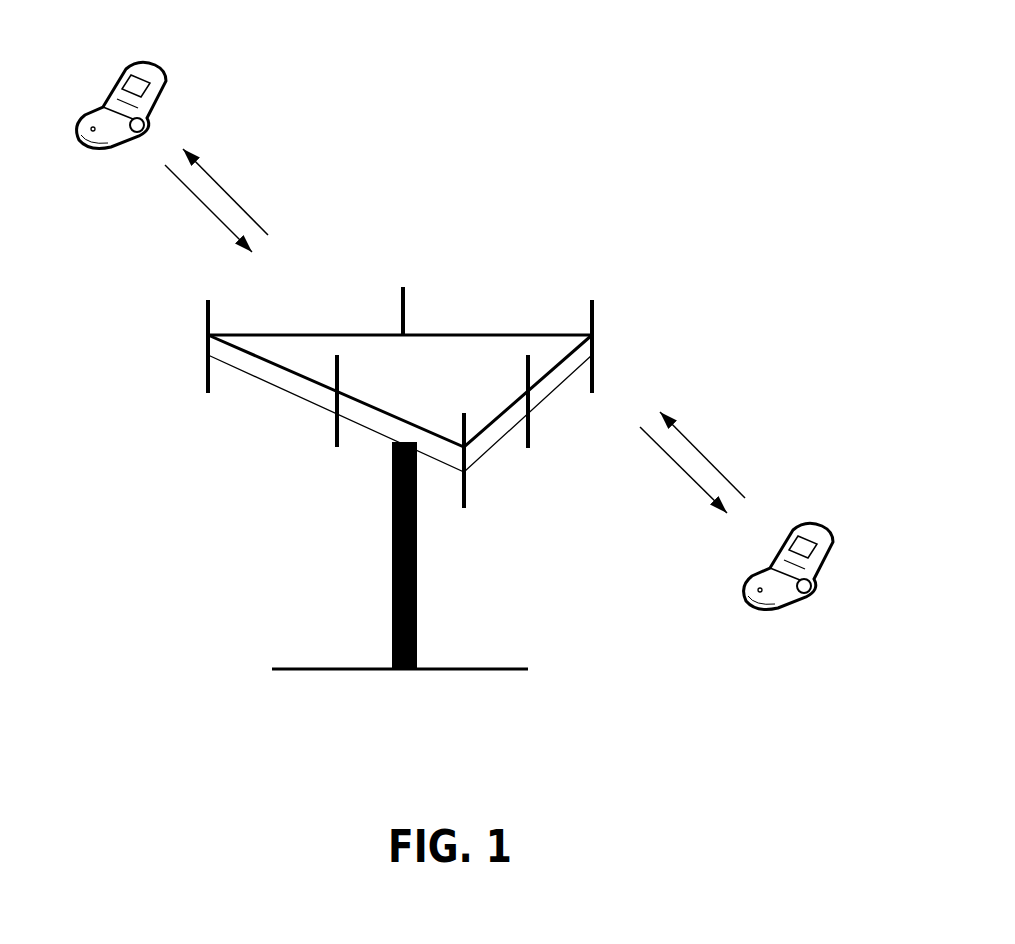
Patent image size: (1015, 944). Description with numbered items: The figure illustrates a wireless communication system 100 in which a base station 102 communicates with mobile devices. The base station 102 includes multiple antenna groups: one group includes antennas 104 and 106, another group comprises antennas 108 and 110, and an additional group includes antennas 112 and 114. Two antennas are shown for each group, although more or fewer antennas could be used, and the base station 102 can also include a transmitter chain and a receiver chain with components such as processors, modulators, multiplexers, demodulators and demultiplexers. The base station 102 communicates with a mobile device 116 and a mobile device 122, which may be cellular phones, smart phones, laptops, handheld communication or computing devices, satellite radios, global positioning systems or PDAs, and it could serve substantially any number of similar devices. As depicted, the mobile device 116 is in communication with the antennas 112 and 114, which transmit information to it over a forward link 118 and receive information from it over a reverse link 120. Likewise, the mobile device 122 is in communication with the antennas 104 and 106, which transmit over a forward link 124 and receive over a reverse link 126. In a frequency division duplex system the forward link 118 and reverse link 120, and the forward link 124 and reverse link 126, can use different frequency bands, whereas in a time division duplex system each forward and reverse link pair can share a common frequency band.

The wireless communication system 100 is at (890, 110).
The base station 102 is at (417, 670).
The antenna 104 is at (592, 298).
The antenna 106 is at (528, 427).
The antenna 108 is at (464, 488).
The antenna 110 is at (337, 450).
The antenna 112 is at (208, 298).
The antenna 114 is at (403, 296).
The mobile device 116 is at (133, 57).
The forward link 118 is at (228, 193).
The reverse link 120 is at (218, 222).
The mobile device 122 is at (794, 523).
The forward link 124 is at (690, 480).
The reverse link 126 is at (698, 450).